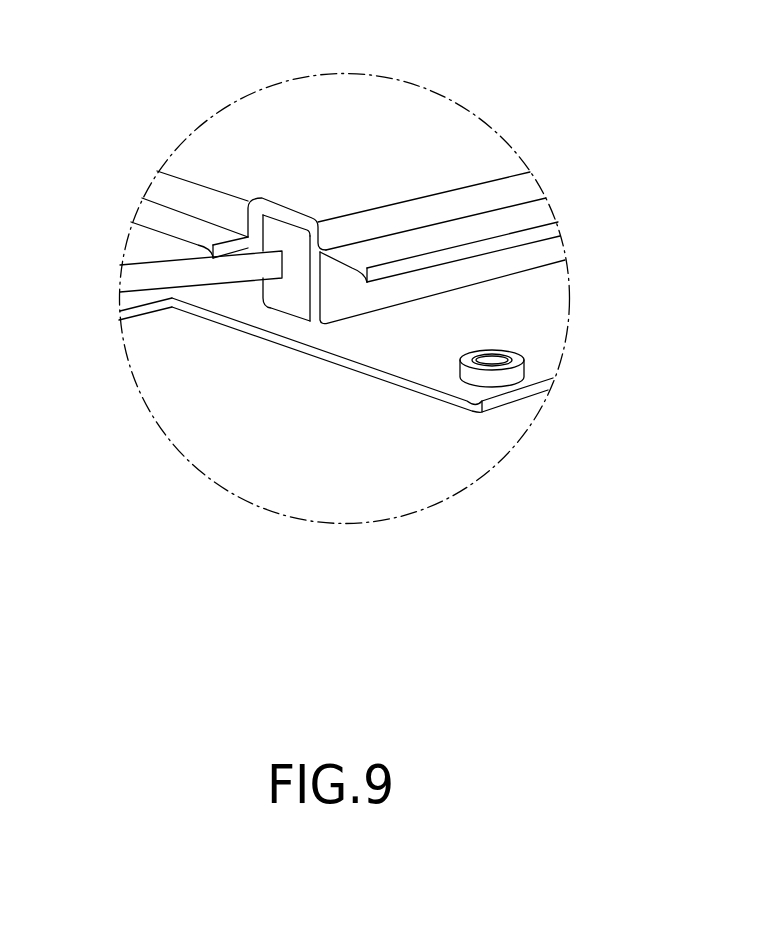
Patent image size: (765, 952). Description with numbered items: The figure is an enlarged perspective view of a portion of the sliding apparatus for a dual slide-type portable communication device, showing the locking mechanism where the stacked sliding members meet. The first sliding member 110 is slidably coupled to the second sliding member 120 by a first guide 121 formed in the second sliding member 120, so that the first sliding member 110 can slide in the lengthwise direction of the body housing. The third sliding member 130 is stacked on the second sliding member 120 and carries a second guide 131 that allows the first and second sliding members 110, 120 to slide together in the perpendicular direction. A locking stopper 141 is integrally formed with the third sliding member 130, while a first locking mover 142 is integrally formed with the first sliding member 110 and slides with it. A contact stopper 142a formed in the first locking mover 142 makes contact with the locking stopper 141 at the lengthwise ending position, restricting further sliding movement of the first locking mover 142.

The first sliding member 110 is at (416, 118).
The second sliding member 120 is at (135, 248).
The first guide 121 is at (135, 296).
The third sliding member 130 is at (543, 324).
The second guide 131 is at (284, 277).
The locking stopper 141 is at (355, 302).
The first locking mover 142 is at (163, 187).
The contact stopper 142a is at (534, 217).